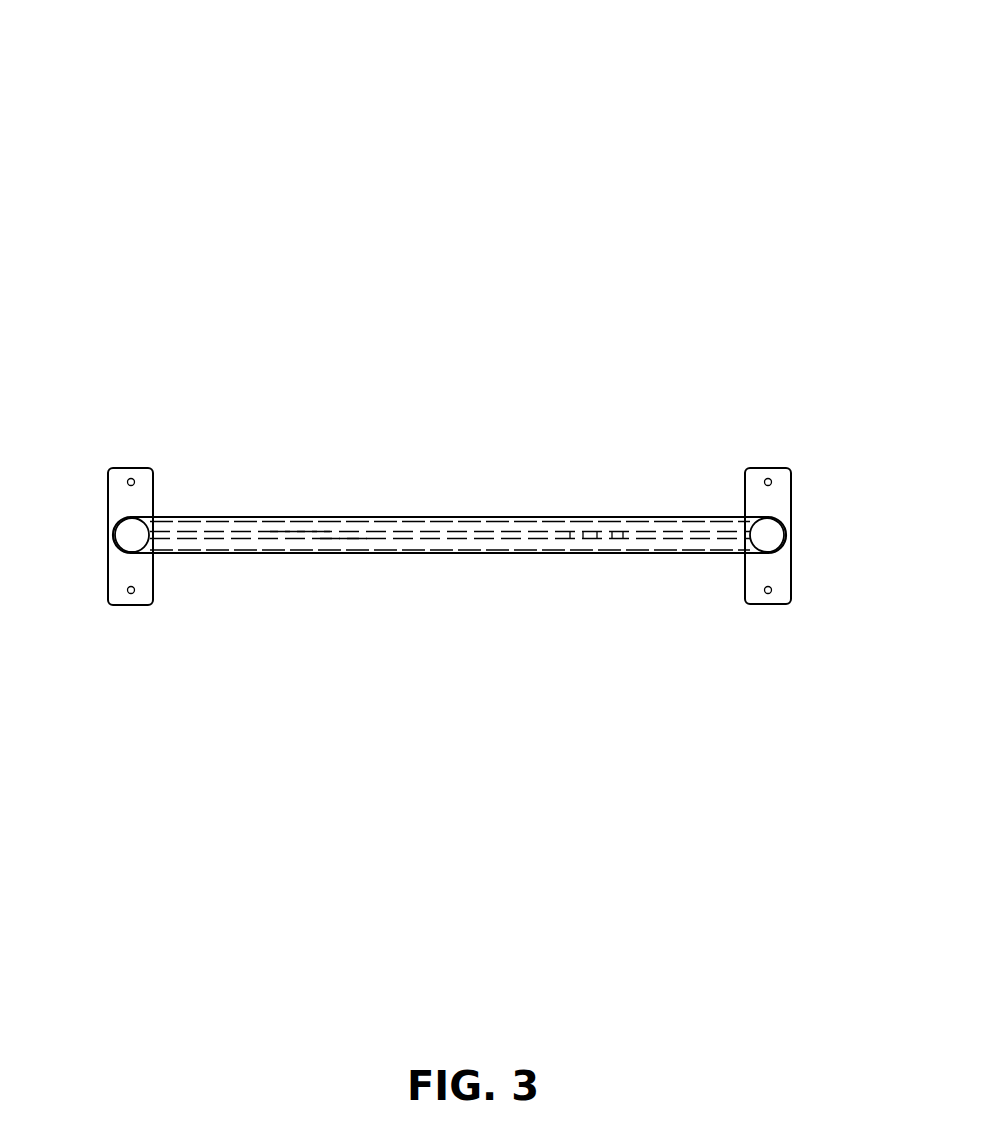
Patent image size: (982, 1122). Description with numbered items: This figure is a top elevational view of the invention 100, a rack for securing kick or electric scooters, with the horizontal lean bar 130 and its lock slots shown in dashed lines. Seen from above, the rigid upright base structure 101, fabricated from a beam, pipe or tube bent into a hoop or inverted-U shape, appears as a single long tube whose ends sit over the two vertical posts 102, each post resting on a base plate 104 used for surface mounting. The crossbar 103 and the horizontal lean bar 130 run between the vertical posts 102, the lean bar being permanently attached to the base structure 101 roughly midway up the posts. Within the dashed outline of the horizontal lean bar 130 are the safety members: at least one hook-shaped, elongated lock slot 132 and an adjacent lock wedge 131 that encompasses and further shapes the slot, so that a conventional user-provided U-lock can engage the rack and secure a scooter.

The invention 100 is at (881, 56).
The base structure 101 is at (500, 514).
The vertical posts 102 is at (773, 518).
The crossbar 103 is at (540, 555).
The base plates 104 is at (112, 597).
The horizontal lean bar 130 is at (244, 530).
The lock wedge 131 is at (305, 534).
The lock slot 132 is at (345, 535).